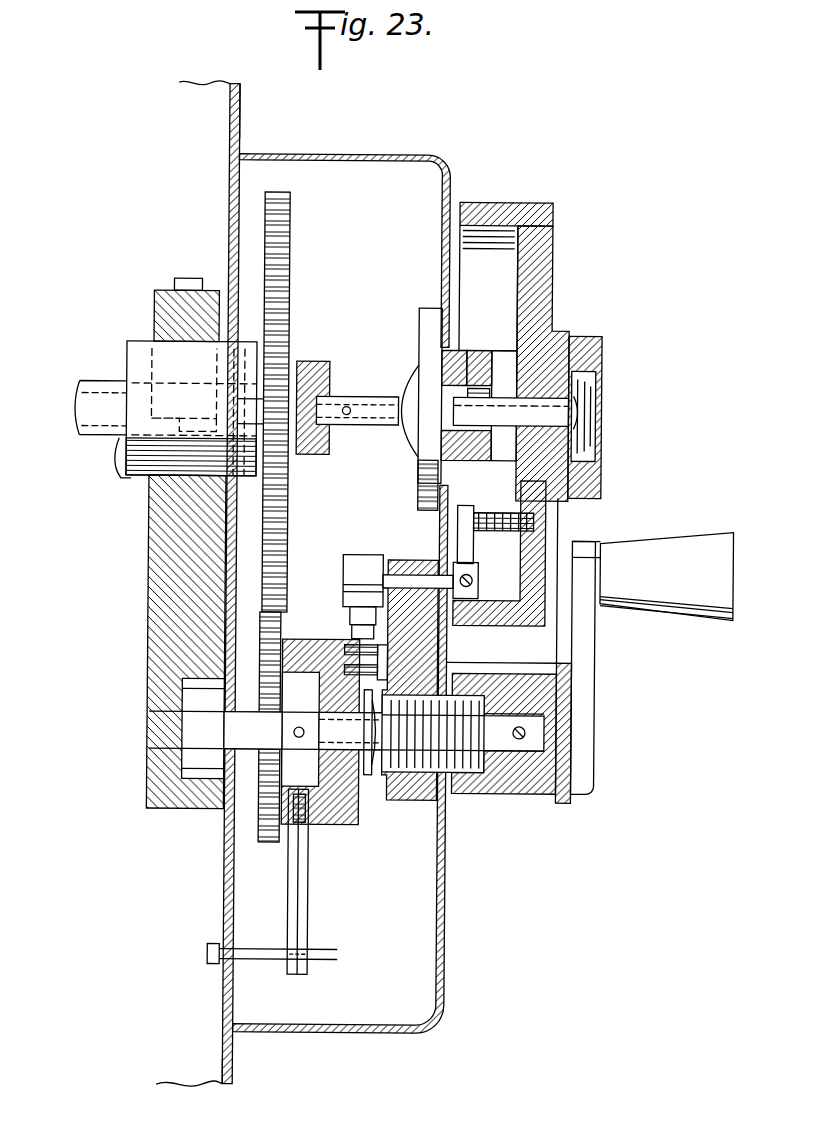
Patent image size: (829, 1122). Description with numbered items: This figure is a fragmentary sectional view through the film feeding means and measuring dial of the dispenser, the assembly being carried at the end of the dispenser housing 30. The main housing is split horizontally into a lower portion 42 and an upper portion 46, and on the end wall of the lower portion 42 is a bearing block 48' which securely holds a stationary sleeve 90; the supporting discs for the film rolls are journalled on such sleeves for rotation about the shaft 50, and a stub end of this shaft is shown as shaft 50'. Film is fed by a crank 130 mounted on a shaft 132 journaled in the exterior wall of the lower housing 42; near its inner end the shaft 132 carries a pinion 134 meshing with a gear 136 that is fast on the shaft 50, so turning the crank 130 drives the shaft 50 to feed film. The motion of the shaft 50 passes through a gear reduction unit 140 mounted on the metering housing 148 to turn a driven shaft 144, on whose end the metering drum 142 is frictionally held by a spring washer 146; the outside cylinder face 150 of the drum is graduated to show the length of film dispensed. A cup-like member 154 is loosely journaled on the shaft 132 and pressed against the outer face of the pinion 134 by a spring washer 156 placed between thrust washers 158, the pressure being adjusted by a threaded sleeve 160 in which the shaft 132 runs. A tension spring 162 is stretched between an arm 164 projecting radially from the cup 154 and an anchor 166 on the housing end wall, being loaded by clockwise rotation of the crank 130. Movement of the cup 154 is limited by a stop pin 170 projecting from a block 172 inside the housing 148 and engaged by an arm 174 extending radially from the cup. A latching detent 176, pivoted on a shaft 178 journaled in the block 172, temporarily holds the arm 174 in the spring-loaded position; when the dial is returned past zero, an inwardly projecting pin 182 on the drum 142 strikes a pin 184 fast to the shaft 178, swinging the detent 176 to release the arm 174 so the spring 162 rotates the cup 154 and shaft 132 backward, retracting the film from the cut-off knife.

The cabinet 30 is at (238, 1062).
The lower portion of the housing 42 is at (226, 855).
The upper portion of the housing 46 is at (236, 125).
The bearing block 48' is at (168, 560).
The shaft 50 is at (100, 385).
The stub shaft 50' is at (357, 388).
The stationary sleeve 90 is at (135, 475).
The crank 130 is at (590, 702).
The shaft 132 is at (335, 740).
The pinion 134 is at (265, 845).
The gear 136 is at (287, 297).
The gear reduction unit 140 is at (410, 346).
The metering drum 142 is at (540, 283).
The driven shaft 144 is at (470, 410).
The spring washer 146 is at (585, 395).
The metering housing 148 is at (443, 898).
The outside cylinder face 150 is at (520, 205).
The cup-like member 154 is at (313, 828).
The spring washer 156 is at (369, 780).
The thrust washers 158 is at (325, 700).
The threaded sleeve 160 is at (470, 795).
The tension spring 162 is at (318, 956).
The arm 164 is at (308, 918).
The anchor 166 is at (258, 960).
The stop pin 170 is at (385, 625).
The block 172 is at (395, 575).
The arm 174 is at (352, 630).
The latching detent 176 is at (352, 556).
The shaft 178 is at (418, 580).
The inwardly projecting pin 182 is at (510, 520).
The pin 184 is at (473, 533).